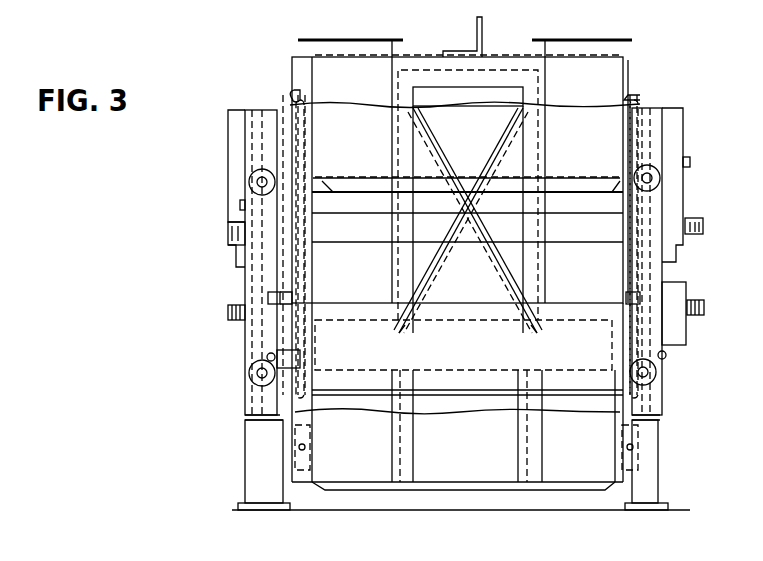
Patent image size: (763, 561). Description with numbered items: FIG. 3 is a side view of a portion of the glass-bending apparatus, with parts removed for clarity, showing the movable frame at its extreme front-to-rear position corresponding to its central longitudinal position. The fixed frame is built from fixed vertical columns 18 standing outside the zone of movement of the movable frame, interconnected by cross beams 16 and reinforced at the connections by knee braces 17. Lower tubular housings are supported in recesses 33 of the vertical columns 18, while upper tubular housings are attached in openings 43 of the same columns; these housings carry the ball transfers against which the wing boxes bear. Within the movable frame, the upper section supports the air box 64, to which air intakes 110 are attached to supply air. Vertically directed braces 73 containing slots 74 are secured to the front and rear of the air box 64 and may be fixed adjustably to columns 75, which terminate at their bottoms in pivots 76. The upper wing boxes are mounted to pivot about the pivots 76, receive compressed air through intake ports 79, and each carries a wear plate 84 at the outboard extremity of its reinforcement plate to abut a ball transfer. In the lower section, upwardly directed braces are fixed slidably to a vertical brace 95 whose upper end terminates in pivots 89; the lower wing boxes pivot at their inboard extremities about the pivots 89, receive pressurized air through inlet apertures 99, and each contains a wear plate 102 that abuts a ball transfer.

The air intakes 110 is at (362, 47).
The air box 64 is at (465, 253).
The cross beams 16 is at (247, 112).
The knee braces 17 is at (234, 148).
The vertically directed braces 73 is at (290, 98).
The slots 74 is at (300, 128).
The columns 75 is at (301, 270).
The openings 43 is at (258, 181).
The wear plate 84 is at (700, 162).
The intake ports 79 is at (236, 244).
The pivots 76 is at (268, 298).
The inlet apertures 99 is at (230, 314).
The wear plate 102 is at (686, 335).
The pivots 89 is at (268, 356).
The recesses 33 is at (249, 372).
The fixed vertical columns 18 is at (262, 419).
The vertical brace 95 is at (306, 452).